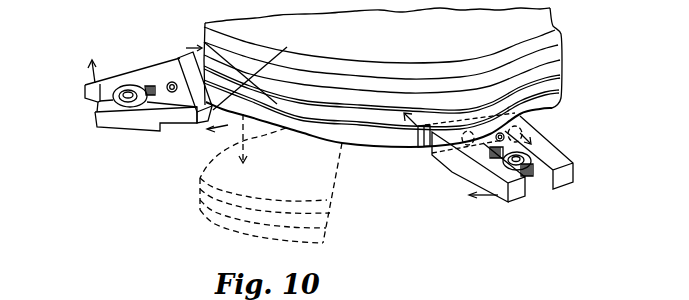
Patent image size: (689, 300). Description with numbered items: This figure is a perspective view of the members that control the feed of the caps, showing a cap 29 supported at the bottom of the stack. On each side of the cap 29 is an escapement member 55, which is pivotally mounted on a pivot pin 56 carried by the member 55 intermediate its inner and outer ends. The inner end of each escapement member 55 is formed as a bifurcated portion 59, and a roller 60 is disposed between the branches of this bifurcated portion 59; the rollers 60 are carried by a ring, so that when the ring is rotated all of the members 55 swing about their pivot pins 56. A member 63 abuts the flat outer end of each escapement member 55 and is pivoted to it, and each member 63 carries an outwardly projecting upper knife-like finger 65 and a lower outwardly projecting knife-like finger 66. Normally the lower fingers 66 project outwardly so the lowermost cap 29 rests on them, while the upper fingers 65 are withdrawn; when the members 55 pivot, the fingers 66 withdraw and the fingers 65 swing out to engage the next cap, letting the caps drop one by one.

The cap 29 is at (553, 43).
The escapement member 55 is at (135, 72).
The pivot pin 56 is at (171, 82).
The bifurcated portion 59 is at (113, 115).
The roller 60 is at (112, 106).
The member 63 is at (187, 58).
The upper knife-like finger 65 is at (207, 57).
The lower knife-like finger 66 is at (553, 122).